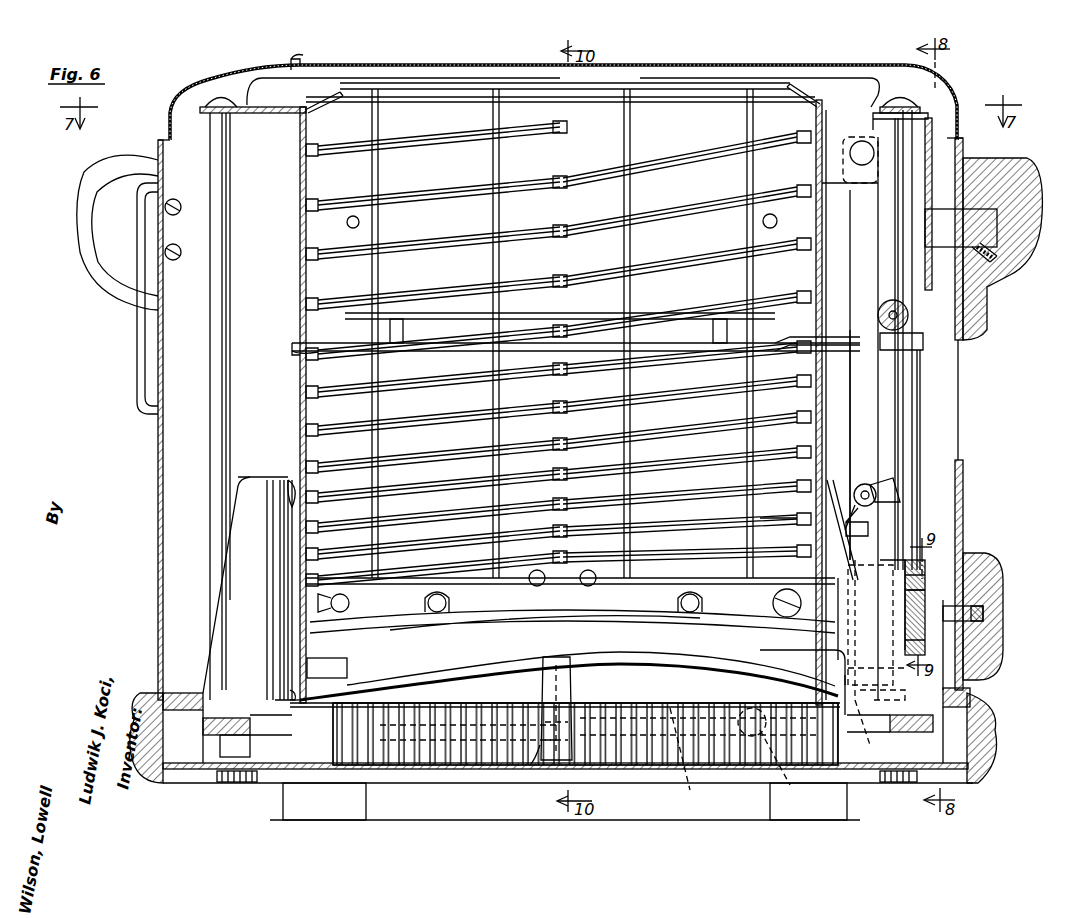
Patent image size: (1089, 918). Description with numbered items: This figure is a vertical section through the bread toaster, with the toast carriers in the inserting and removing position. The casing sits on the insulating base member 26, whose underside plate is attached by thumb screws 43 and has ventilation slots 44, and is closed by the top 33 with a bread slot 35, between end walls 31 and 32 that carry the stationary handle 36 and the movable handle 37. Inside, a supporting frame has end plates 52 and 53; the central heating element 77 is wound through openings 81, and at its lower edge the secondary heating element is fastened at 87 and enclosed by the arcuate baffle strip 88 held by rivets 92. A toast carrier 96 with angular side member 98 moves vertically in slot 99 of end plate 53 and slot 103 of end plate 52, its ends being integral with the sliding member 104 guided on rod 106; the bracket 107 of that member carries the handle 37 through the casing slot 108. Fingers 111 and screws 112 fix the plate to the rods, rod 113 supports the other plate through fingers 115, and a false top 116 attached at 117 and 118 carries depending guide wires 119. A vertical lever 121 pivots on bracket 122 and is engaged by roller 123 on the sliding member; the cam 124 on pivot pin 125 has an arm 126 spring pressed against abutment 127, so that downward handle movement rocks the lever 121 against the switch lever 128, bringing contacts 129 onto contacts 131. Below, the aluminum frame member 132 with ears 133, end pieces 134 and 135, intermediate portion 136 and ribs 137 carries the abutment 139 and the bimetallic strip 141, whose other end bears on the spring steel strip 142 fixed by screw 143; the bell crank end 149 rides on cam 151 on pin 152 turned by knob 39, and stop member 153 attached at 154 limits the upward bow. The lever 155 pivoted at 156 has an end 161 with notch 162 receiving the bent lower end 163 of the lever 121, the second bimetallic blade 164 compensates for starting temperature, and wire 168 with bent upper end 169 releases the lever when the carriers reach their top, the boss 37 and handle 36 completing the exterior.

The base member 26 is at (997, 720).
The end wall 31 is at (158, 408).
The end wall 32 is at (966, 472).
The top 33 is at (195, 80).
The slot 35 is at (720, 62).
The handle 36 is at (117, 284).
The handle 37 is at (1040, 190).
The knob 39 is at (1003, 575).
The thumb screws 43 is at (232, 783).
The slots 44 is at (420, 765).
The end plate 52 is at (825, 240).
The end plate 53 is at (300, 226).
The central heating element 77 is at (563, 330).
The openings 81 is at (567, 180).
The fastening 87 is at (350, 602).
The arcuate baffle strip 88 is at (572, 626).
The rivets 92 is at (448, 601).
The toast carrier 96 is at (678, 352).
The side member 98 is at (718, 345).
The slot 99 is at (292, 370).
The slot 103 is at (825, 410).
The sliding member 104 is at (933, 165).
The rod 106 is at (900, 420).
The bracket 107 is at (980, 237).
The slot 108 is at (962, 380).
The fingers 111 is at (838, 112).
The screws 112 is at (905, 97).
The rod 113 is at (220, 290).
The fingers 115 is at (240, 113).
The false top 116 is at (296, 62).
The attachment 117 is at (246, 98).
The attachment 118 is at (877, 92).
The guide wires 119 is at (490, 216).
The lever 121 is at (863, 375).
The bracket 122 is at (861, 160).
The roller 123 is at (910, 320).
The cam 124 is at (895, 486).
The pivot pin 125 is at (868, 492).
The arm 126 is at (860, 525).
The abutment 127 is at (828, 531).
The switch lever 128 is at (850, 490).
The contacts 129 is at (850, 615).
The contacts 131 is at (838, 633).
The frame member 132 is at (305, 760).
The ears 133 is at (203, 727).
The end piece 134 is at (972, 690).
The end piece 135 is at (245, 585).
The intermediate portion 136 is at (606, 765).
The ribs 137 is at (632, 765).
The abutment 139 is at (810, 680).
The bimetallic strip 141 is at (610, 663).
The strip of spring steel 142 is at (280, 600).
The screw 143 is at (292, 478).
The end of bell crank lever 149 is at (925, 578).
The cam 151 is at (920, 610).
The pin 152 is at (988, 606).
The stop member 153 is at (550, 680).
The attachment 154 is at (545, 768).
The lever 155 is at (688, 758).
The pivot 156 is at (792, 764).
The end of lever 161 is at (893, 690).
The notch 162 is at (872, 657).
The bent lower end 163 is at (882, 691).
The second bimetallic blade 164 is at (278, 553).
The wire 168 is at (914, 408).
The bent upper end 169 is at (925, 110).